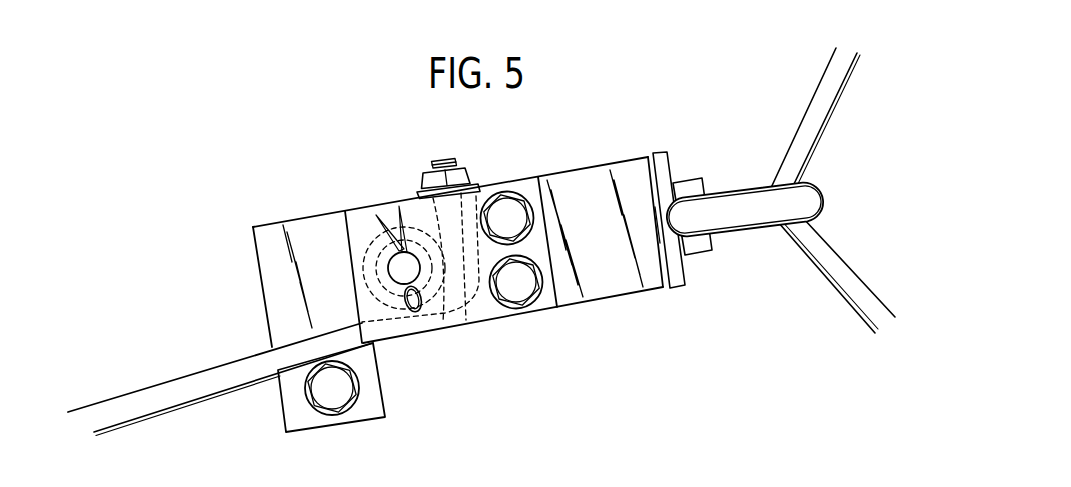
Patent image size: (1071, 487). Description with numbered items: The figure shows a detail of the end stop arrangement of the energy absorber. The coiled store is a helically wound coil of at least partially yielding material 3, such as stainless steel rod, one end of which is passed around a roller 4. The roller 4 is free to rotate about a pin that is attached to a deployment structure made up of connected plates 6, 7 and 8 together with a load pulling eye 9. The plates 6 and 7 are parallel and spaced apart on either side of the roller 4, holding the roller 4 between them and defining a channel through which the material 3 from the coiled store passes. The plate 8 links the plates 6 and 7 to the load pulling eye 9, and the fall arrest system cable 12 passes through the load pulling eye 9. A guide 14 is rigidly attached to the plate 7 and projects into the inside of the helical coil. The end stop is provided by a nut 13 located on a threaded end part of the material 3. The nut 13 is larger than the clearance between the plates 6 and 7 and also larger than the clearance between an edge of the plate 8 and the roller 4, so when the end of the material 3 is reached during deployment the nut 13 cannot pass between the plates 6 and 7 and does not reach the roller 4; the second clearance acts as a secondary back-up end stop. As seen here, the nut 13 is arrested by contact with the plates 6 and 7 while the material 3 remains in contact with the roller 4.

The at least partially yielding material 3 is at (164, 404).
The roller 4 is at (378, 257).
The plate 6 is at (530, 190).
The plate 7 is at (266, 281).
The plate 8 is at (598, 182).
The load pulling eye 9 is at (738, 190).
The fall arrest system cable 12 is at (827, 70).
The nut 13 is at (427, 178).
The guide 14 is at (332, 395).